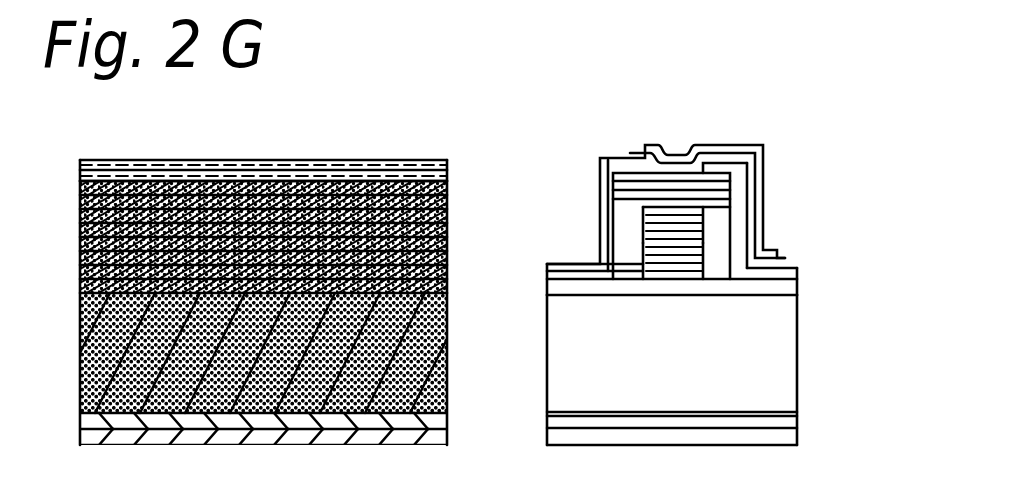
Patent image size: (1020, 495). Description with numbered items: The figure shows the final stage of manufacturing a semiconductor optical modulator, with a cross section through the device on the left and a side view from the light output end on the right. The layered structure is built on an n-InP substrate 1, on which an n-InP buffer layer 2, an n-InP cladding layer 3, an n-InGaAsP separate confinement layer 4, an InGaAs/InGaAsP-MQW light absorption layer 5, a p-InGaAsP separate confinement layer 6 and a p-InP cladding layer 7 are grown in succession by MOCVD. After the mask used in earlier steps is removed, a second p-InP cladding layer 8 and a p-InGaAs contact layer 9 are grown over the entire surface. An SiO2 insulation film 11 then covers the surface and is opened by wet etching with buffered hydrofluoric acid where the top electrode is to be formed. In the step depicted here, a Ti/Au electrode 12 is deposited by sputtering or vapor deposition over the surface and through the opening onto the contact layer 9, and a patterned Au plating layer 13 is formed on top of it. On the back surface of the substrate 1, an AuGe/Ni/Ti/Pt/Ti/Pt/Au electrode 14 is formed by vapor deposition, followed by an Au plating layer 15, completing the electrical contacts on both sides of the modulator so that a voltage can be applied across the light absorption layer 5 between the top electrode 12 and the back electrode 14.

The n-InP substrate 1 is at (556, 357).
The n-InP buffer layer 2 is at (556, 291).
The n-InP cladding layer 3 is at (561, 275).
The n-InGaAsP separate confinement layer 4 is at (645, 257).
The InGaAs/InGaAsP-MQW light absorption layer 5 is at (645, 240).
The p-InGaAsP separate confinement layer 6 is at (645, 223).
The p-InP cladding layer 7 is at (645, 207).
The second p-InP cladding layer 8 is at (600, 197).
The p-InGaAs contact layer 9 is at (600, 177).
The SiO2 insulation film 11 is at (800, 282).
The Ti/Au electrode 12 is at (284, 160).
The Au plating layer 13 is at (241, 160).
The AuGe/Ni/Ti/Pt/Ti/Pt/Au electrode 14 is at (553, 413).
The Au plating layer 15 is at (551, 437).